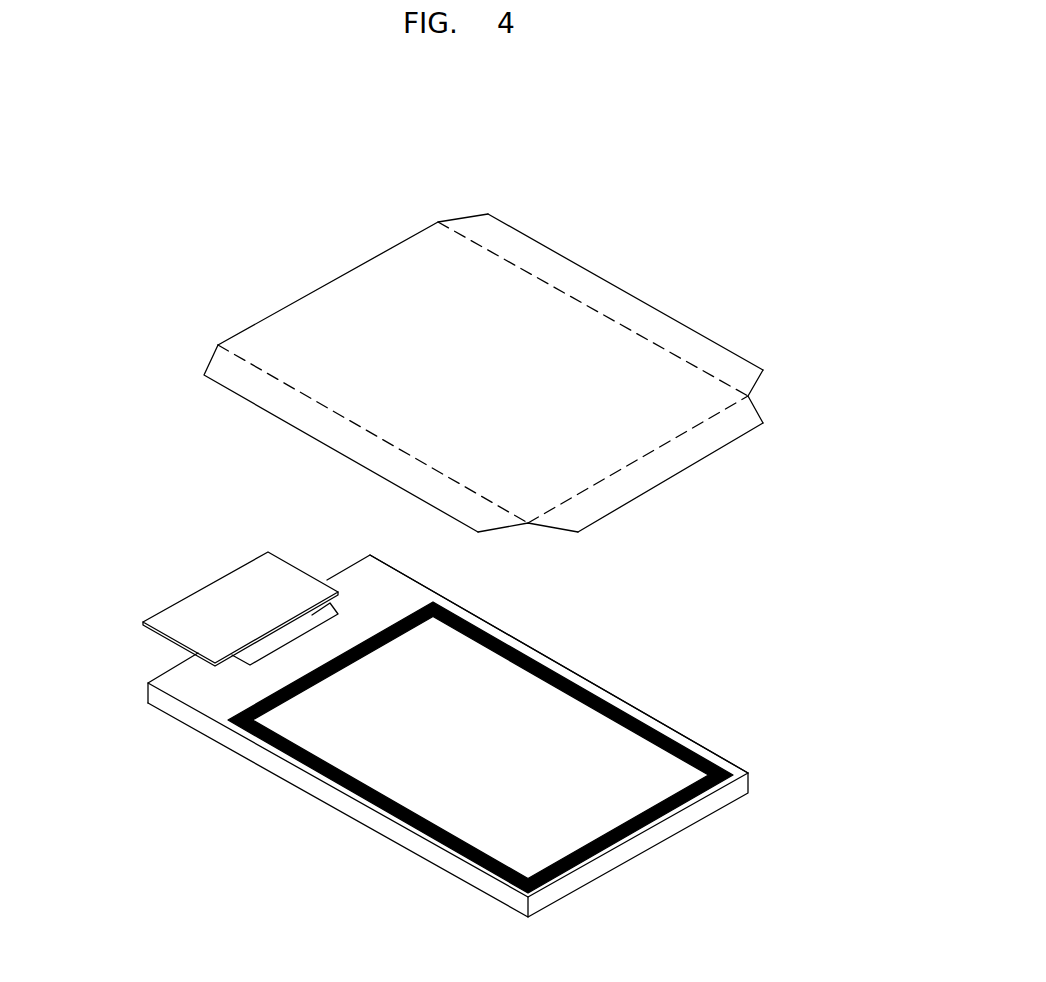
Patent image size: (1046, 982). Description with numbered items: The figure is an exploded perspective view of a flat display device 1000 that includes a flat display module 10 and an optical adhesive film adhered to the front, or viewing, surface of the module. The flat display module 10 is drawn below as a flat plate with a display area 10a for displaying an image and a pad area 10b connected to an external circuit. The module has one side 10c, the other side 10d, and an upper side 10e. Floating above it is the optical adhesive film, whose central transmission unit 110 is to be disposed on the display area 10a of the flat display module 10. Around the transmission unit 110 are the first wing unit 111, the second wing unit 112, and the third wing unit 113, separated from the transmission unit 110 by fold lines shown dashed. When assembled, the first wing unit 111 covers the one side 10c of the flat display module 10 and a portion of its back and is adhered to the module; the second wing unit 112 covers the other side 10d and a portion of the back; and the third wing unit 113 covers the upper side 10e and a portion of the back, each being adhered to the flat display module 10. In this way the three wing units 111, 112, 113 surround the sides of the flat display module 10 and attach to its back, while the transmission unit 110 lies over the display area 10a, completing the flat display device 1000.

The flat display device 1000 is at (618, 208).
The transmission unit 110 is at (318, 290).
The first wing unit 111 is at (247, 383).
The second wing unit 112 is at (627, 305).
The third wing unit 113 is at (650, 475).
The flat display module 10 is at (264, 851).
The display area 10a is at (380, 758).
The pad area 10b is at (195, 690).
The one side 10c is at (462, 868).
The other side 10d is at (663, 722).
The upper side 10e is at (625, 853).